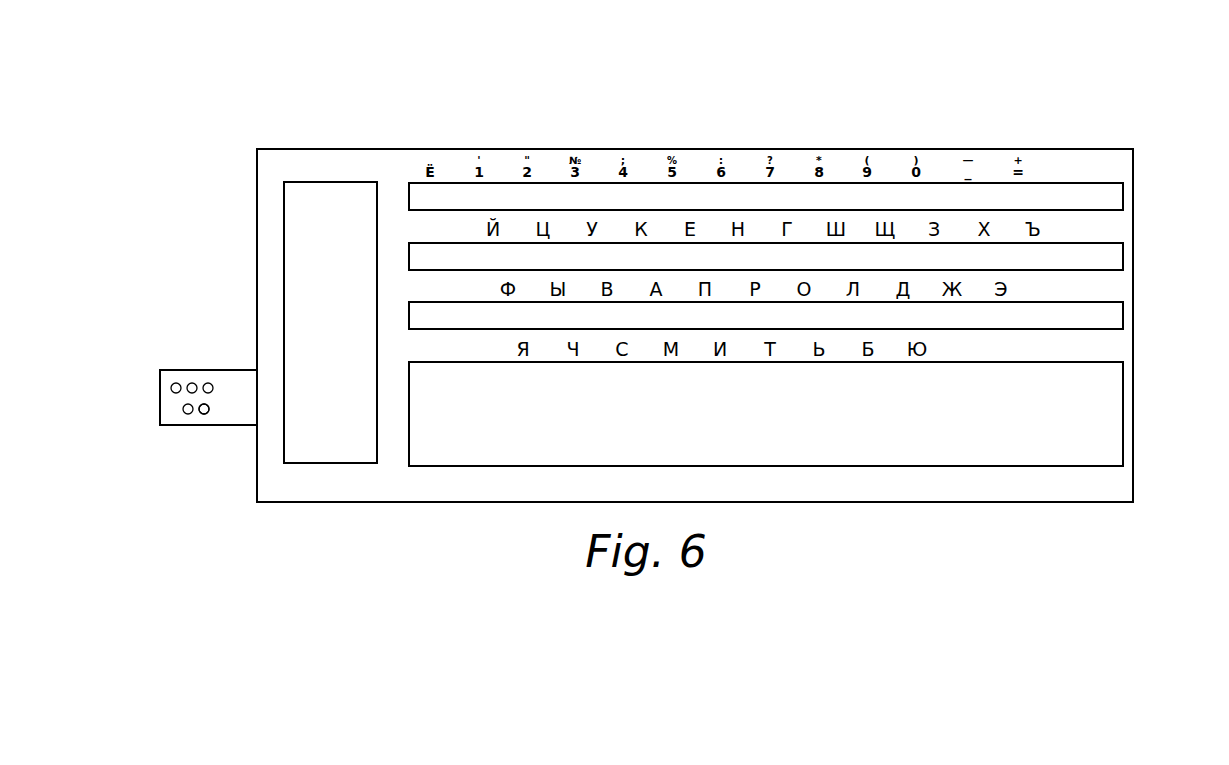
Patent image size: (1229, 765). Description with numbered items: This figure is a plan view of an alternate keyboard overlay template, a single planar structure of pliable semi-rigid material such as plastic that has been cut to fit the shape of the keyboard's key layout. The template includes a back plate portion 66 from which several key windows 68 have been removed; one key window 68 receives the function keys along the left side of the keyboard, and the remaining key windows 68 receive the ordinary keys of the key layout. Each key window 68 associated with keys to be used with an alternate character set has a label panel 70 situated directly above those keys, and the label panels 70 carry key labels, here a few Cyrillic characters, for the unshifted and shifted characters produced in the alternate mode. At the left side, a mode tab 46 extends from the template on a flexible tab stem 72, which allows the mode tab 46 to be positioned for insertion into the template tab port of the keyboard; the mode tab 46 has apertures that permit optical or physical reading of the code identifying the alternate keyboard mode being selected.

The back plate portion 66 is at (338, 165).
The key windows 68 is at (430, 198).
The label panels 70 is at (1113, 227).
The mode tab 46 is at (185, 382).
The flexible tab stem 72 is at (231, 408).